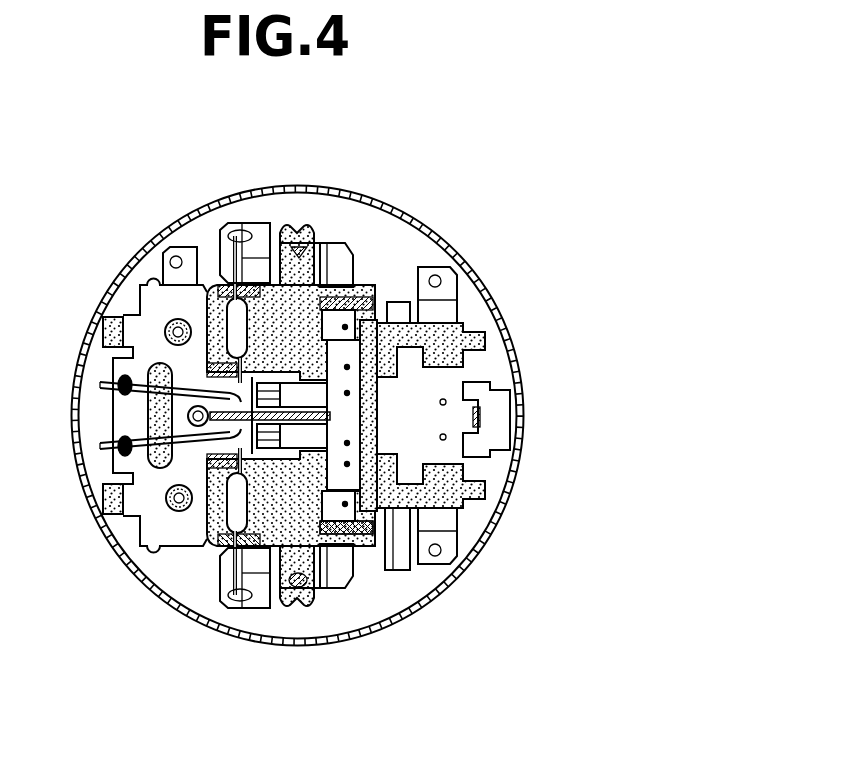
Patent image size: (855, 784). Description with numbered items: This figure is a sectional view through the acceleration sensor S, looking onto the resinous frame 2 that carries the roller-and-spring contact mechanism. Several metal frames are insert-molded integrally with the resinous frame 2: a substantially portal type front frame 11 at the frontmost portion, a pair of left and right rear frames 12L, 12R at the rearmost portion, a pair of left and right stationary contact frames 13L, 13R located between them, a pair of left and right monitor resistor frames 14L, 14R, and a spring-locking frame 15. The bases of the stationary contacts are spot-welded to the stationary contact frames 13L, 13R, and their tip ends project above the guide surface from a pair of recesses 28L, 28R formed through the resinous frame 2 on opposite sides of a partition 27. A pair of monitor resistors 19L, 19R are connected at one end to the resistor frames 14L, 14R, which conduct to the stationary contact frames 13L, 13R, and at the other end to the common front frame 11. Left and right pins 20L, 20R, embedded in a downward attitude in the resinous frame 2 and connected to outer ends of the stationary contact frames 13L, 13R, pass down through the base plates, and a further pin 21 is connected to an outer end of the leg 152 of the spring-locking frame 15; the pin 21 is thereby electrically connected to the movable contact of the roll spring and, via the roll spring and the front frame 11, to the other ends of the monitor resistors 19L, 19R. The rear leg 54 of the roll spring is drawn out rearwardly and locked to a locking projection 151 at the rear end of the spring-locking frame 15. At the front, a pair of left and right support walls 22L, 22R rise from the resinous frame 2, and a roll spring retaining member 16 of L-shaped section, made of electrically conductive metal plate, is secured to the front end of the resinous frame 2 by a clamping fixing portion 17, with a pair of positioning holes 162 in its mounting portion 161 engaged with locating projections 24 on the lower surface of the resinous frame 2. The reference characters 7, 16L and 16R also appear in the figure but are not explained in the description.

The acceleration sensor S is at (106, 230).
The housing 7 is at (413, 222).
The resinous frame 2 is at (297, 221).
The front frame 11 is at (173, 249).
The left rear frame 12L is at (443, 273).
The right rear frame 12R is at (445, 550).
The left stationary contact frame 13L is at (335, 265).
The right stationary contact frame 13R is at (340, 573).
The left monitor resistor frame 14L is at (253, 222).
The right monitor resistor frame 14R is at (257, 610).
The spring-locking frame 15 is at (480, 377).
The locking projection 151 is at (480, 419).
The leg of spring locking frame 152 is at (395, 548).
The roll spring retaining member 16 is at (94, 422).
The mounting portion 161 is at (100, 372).
The positioning holes 162 is at (100, 560).
The left contact chamber 16L is at (423, 399).
The right contact chamber 16R is at (452, 478).
The clamping fixing portion 17 is at (159, 419).
The left monitor resistor 19L is at (238, 320).
The right monitor resistor 19R is at (238, 513).
The left pin 20L is at (321, 245).
The right pin 20R is at (320, 603).
The pin 21 is at (360, 567).
The left support wall 22L is at (100, 313).
The right support wall 22R is at (103, 498).
The locating projections 24 is at (178, 318).
The partition 27 is at (412, 446).
The left recess 28L is at (263, 378).
The right recess 28R is at (263, 453).
The rear leg of roll spring 54 is at (498, 392).